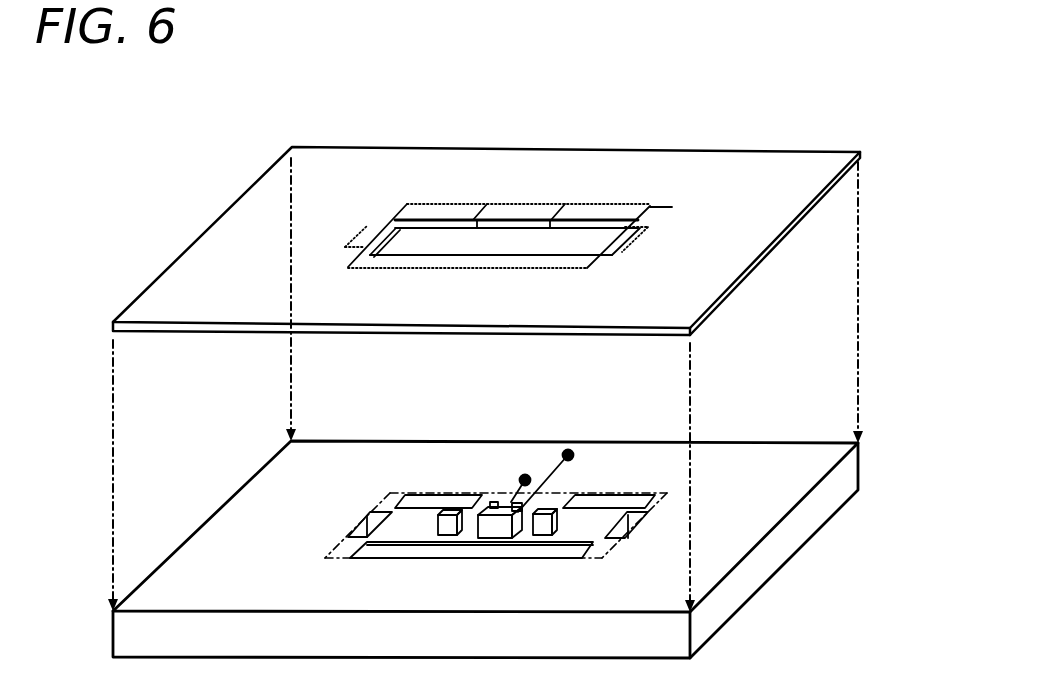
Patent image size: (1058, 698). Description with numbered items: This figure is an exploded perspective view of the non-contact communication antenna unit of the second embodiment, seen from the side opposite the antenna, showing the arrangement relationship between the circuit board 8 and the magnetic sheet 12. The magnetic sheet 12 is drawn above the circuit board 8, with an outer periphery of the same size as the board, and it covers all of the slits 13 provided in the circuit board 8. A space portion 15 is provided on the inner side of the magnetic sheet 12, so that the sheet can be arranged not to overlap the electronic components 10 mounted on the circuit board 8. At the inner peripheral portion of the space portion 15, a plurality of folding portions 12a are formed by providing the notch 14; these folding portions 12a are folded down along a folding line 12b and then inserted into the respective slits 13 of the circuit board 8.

The circuit board 8 is at (737, 453).
The electronic components 10 is at (497, 500).
The magnetic sheet 12 is at (522, 187).
The folding portions 12a is at (466, 220).
The folding line 12b is at (417, 204).
The slits 13 is at (390, 500).
The notch 14 is at (647, 207).
The space portion 15 is at (583, 242).